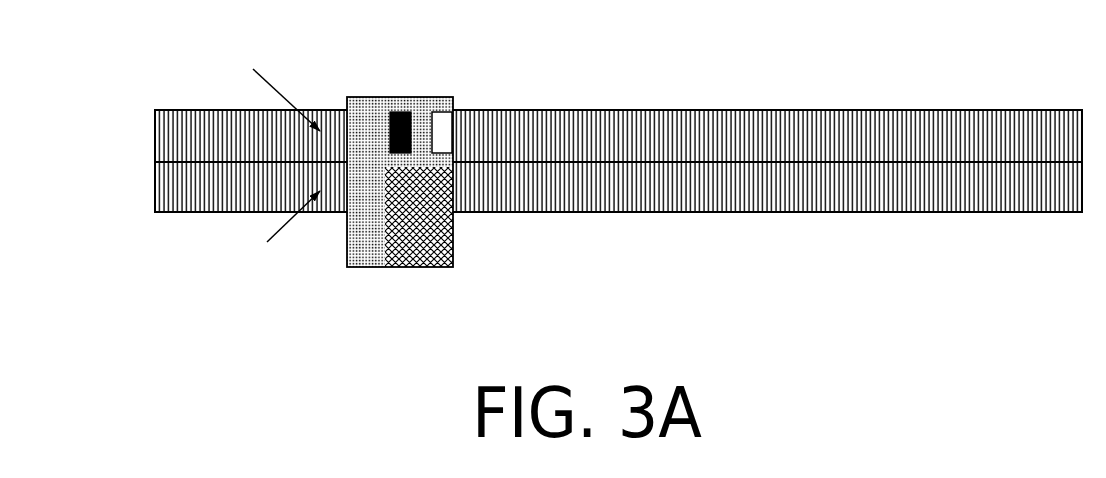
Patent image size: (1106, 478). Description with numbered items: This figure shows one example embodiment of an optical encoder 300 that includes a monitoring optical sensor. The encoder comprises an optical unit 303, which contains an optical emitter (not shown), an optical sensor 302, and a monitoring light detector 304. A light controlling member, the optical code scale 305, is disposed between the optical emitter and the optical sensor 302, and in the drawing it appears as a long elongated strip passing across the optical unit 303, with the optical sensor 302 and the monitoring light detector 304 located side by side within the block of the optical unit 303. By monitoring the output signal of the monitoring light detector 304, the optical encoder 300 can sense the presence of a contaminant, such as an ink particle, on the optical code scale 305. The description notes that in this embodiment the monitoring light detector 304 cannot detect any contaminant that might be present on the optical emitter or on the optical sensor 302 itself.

The optical encoder 300 is at (77, 54).
The optical sensor 302 is at (407, 119).
The optical unit 303 is at (380, 270).
The monitoring light detector 304 is at (440, 140).
The light controlling member (optical code scale) 305 is at (818, 110).